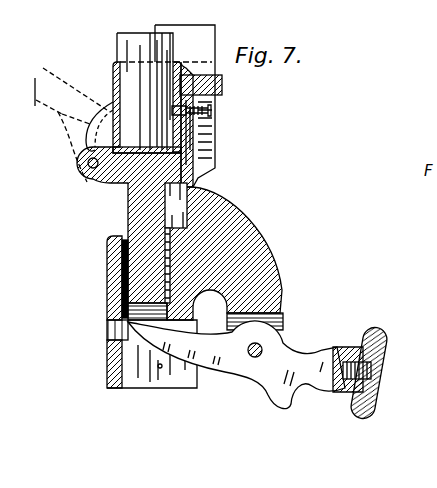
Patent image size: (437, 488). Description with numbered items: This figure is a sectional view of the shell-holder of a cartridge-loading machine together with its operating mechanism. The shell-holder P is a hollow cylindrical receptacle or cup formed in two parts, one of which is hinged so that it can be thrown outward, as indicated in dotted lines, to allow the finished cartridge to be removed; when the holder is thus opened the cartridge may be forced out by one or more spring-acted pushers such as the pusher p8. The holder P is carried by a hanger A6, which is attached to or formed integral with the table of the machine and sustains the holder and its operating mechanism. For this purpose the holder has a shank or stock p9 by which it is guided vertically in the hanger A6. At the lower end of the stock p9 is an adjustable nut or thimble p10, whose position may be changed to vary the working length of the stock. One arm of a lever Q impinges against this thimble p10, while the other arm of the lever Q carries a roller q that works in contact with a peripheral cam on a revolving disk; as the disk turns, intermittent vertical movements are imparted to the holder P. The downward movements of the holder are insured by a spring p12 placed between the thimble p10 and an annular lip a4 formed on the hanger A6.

The shell-holder P is at (115, 68).
The spring-acted pusher p8 is at (172, 110).
The shank or stock p9 is at (137, 203).
The annular lip a4 is at (176, 243).
The spring p12 is at (118, 268).
The hanger A6 is at (107, 288).
The adjustable nut or thimble p10 is at (124, 312).
The lever Q is at (236, 365).
The roller q is at (368, 400).